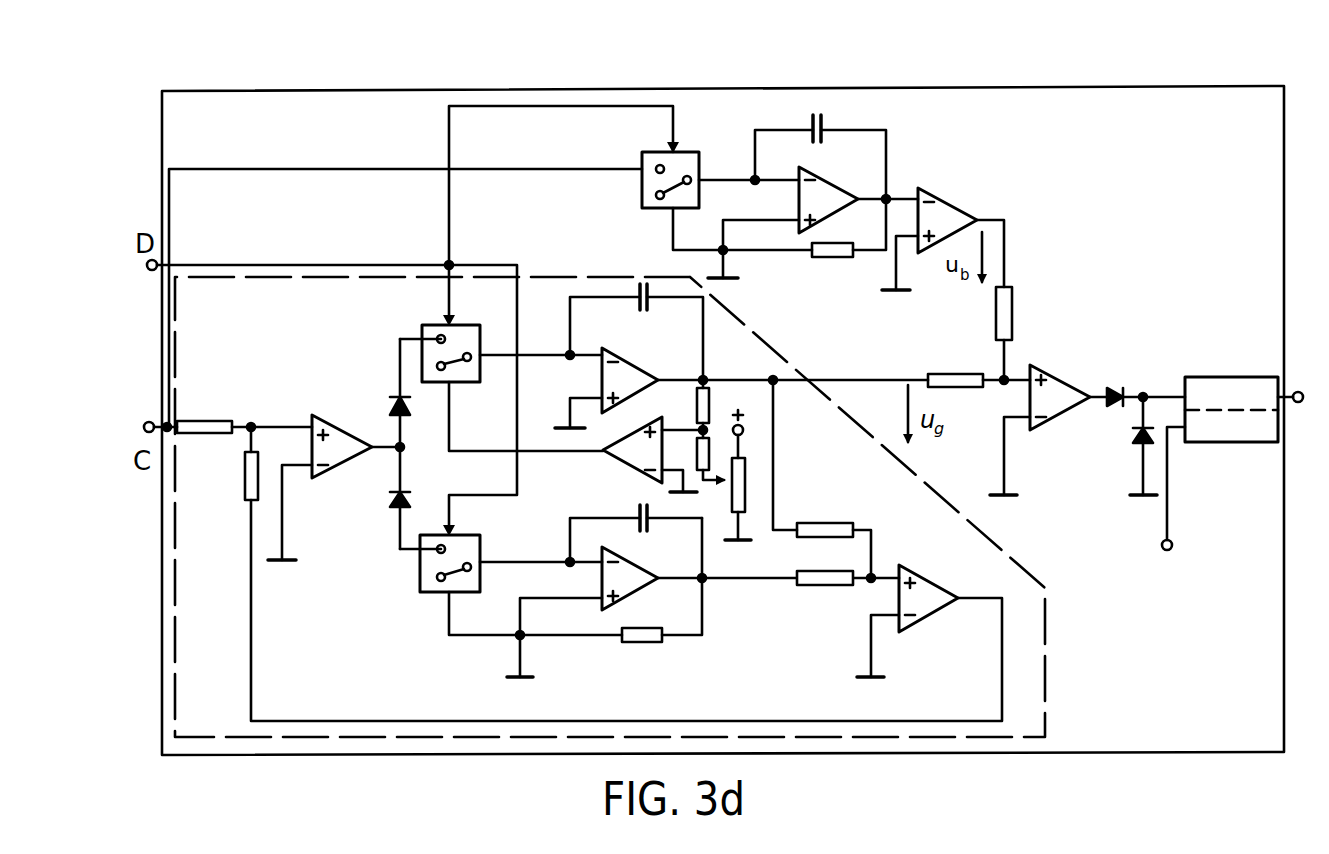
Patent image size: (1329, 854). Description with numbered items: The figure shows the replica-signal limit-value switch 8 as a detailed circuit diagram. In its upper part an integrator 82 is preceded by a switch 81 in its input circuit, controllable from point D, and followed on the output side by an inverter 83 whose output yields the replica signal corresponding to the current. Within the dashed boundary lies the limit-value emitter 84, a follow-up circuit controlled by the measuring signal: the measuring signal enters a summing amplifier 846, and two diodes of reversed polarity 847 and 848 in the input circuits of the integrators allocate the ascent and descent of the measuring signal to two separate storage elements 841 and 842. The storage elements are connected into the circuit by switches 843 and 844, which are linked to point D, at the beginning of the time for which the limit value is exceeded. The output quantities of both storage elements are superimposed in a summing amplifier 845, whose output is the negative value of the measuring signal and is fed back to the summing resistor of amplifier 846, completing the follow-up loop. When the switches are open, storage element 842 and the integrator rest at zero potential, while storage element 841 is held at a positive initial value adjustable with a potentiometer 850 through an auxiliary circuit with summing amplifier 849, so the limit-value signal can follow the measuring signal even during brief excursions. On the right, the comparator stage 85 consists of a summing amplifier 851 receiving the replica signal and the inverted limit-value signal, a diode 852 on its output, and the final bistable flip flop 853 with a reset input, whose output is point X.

The replica-signal limit-value switch 8 is at (959, 753).
The switch 81 is at (642, 190).
The integrator 82 is at (869, 168).
The inverter 83 is at (952, 200).
The limit-value emitter 84 is at (1045, 640).
The storage element 841 is at (685, 345).
The storage element 842 is at (694, 559).
The switch 843 is at (418, 325).
The switch 844 is at (418, 577).
The summing amplifier 845 is at (937, 613).
The summing amplifier 846 is at (331, 417).
The diode 847 is at (392, 403).
The diode 848 is at (390, 496).
The summing amplifier 849 is at (628, 462).
The potentiometer 850 is at (746, 474).
The comparator stage 85 is at (1149, 451).
The summing amplifier 851 is at (1060, 380).
The diode 852 is at (1124, 447).
The bistable flip flop 853 is at (1226, 443).